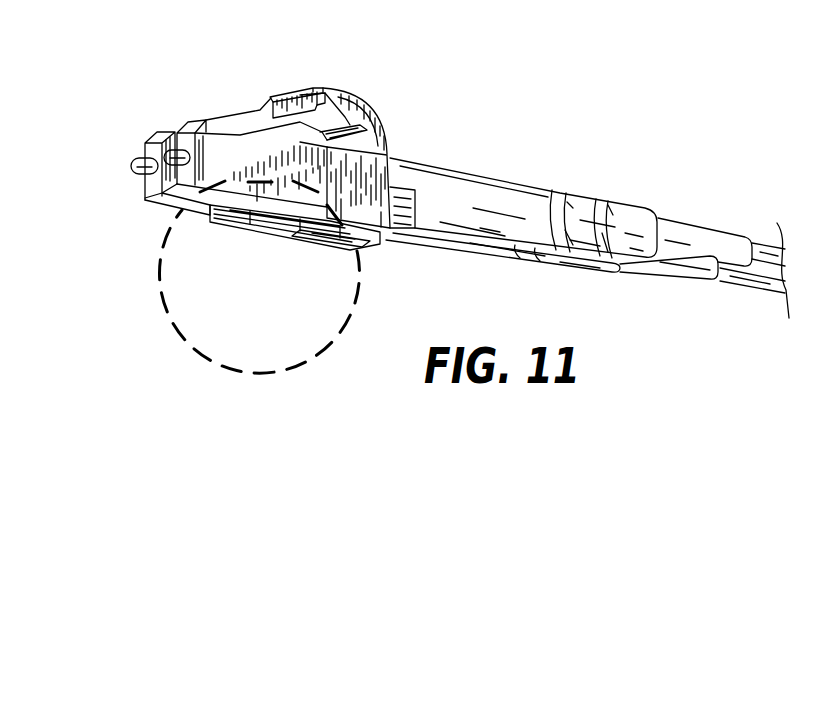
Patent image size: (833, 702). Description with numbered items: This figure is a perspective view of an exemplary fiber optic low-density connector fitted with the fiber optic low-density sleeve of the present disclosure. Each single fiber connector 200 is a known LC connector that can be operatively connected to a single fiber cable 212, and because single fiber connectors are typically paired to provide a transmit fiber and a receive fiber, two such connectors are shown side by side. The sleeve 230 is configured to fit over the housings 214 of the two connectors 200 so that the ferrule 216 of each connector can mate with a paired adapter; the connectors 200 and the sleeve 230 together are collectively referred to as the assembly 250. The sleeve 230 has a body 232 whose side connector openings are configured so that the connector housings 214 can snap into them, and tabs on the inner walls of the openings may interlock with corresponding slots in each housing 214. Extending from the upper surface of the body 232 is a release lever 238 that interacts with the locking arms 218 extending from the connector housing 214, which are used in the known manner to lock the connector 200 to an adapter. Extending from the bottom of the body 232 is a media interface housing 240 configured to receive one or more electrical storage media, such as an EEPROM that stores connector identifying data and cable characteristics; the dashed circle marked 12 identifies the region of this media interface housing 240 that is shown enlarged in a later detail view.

The detail region of FIG. 12 is at (295, 369).
The single fiber connector 200 is at (159, 120).
The single fiber cable 212 is at (772, 232).
The connector housing 214 is at (143, 188).
The ferrule 216 is at (131, 165).
The locking arms 218 is at (262, 98).
The sleeve 230 is at (326, 248).
The body 232 is at (377, 177).
The release lever 238 is at (353, 100).
The media interface housing 240 is at (230, 220).
The assembly 250 is at (574, 88).